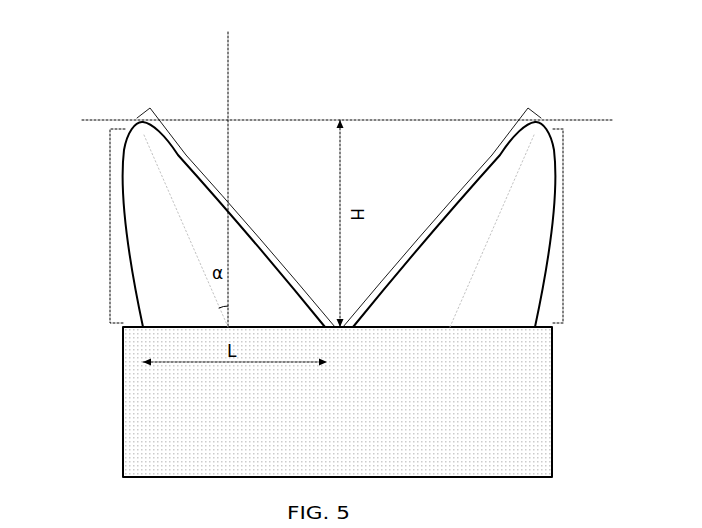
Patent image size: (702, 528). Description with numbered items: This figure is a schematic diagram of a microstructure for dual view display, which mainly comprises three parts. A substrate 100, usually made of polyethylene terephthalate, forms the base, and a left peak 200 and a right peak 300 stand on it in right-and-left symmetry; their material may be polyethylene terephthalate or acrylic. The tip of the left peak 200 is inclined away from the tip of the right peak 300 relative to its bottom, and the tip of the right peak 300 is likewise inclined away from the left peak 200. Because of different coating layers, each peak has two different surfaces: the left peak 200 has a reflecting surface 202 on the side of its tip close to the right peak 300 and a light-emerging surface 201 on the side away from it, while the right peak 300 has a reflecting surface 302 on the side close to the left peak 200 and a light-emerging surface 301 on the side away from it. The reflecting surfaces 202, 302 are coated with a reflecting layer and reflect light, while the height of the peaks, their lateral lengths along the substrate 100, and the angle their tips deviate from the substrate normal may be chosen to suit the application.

The substrate 100 is at (495, 417).
The left peak 200 is at (157, 143).
The light-emerging surface 201 is at (109, 227).
The reflecting surface 202 is at (258, 203).
The right peak 300 is at (521, 147).
The light-emerging surface 301 is at (564, 227).
The reflecting surface 302 is at (428, 212).